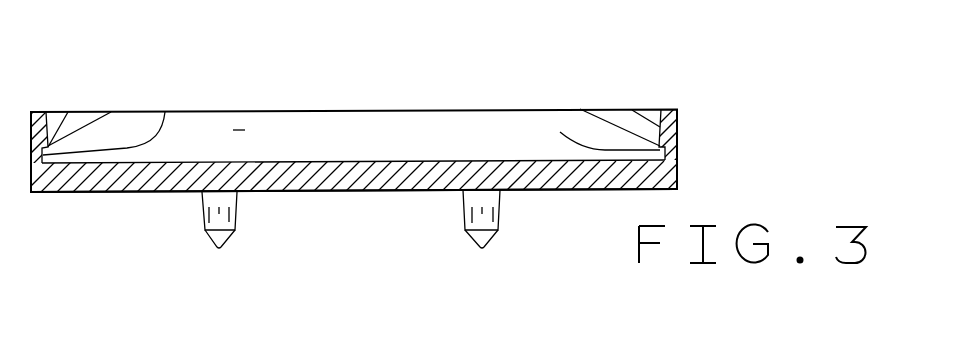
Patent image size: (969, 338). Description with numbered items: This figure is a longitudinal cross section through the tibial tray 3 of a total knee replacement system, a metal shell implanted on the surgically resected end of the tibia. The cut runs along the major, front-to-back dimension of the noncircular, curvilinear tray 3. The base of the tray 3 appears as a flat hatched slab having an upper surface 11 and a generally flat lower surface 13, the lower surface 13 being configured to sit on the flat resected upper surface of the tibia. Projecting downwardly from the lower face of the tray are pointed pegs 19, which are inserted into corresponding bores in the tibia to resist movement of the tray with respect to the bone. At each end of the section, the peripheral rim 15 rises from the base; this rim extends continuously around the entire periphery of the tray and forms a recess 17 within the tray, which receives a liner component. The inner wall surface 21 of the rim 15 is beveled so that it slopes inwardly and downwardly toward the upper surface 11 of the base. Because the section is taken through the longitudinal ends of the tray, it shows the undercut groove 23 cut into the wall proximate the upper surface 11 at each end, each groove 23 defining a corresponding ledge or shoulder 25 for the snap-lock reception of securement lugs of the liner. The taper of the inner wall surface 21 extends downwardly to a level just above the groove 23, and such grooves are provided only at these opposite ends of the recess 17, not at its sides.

The tibial tray 3 is at (700, 143).
The upper surface 11 is at (312, 162).
The lower surface 13 is at (360, 191).
The peripheral rim 15 is at (688, 116).
The recess 17 is at (238, 129).
The pegs 19 is at (204, 225).
The inner wall surface 21 is at (68, 112).
The undercut groove 23 is at (165, 112).
The ledge 25 is at (111, 112).